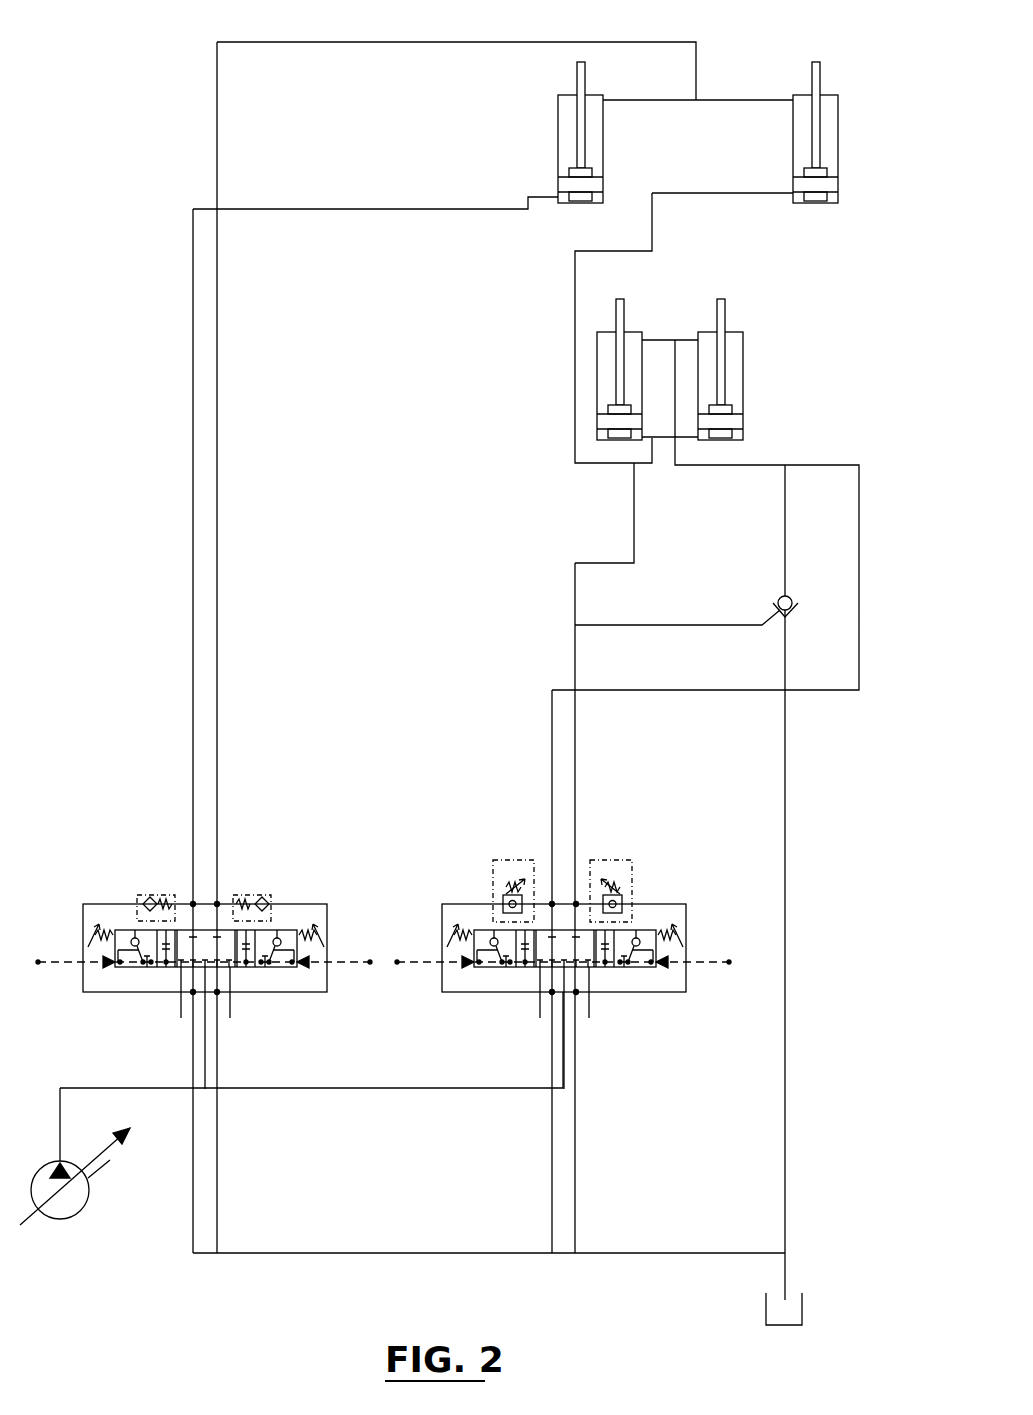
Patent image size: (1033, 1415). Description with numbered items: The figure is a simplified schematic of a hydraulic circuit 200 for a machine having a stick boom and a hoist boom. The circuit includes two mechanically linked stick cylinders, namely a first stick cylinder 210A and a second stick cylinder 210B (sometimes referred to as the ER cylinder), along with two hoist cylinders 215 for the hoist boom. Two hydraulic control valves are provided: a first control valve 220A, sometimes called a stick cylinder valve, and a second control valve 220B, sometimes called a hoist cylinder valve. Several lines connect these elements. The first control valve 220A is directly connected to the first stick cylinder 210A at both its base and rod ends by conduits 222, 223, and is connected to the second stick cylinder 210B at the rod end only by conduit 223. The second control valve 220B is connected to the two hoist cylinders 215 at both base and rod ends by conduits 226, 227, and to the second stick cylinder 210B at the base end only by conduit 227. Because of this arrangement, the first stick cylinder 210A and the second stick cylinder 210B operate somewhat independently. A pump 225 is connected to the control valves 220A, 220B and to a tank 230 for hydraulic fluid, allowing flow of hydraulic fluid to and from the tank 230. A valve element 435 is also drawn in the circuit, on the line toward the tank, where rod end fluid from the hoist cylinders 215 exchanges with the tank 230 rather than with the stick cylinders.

The hydraulic circuit 200 is at (122, 121).
The first stick cylinder 210A is at (558, 137).
The second stick cylinder 210B is at (793, 137).
The hoist cylinders 215 is at (633, 331).
The first control valve 220A is at (98, 904).
The second control valve 220B is at (458, 904).
The conduit 222 is at (193, 567).
The conduit 223 is at (217, 560).
The pump 225 is at (90, 1205).
The conduit 226 is at (552, 768).
The conduit 227 is at (575, 762).
The tank 230 is at (802, 1305).
The check valve 435 is at (778, 601).